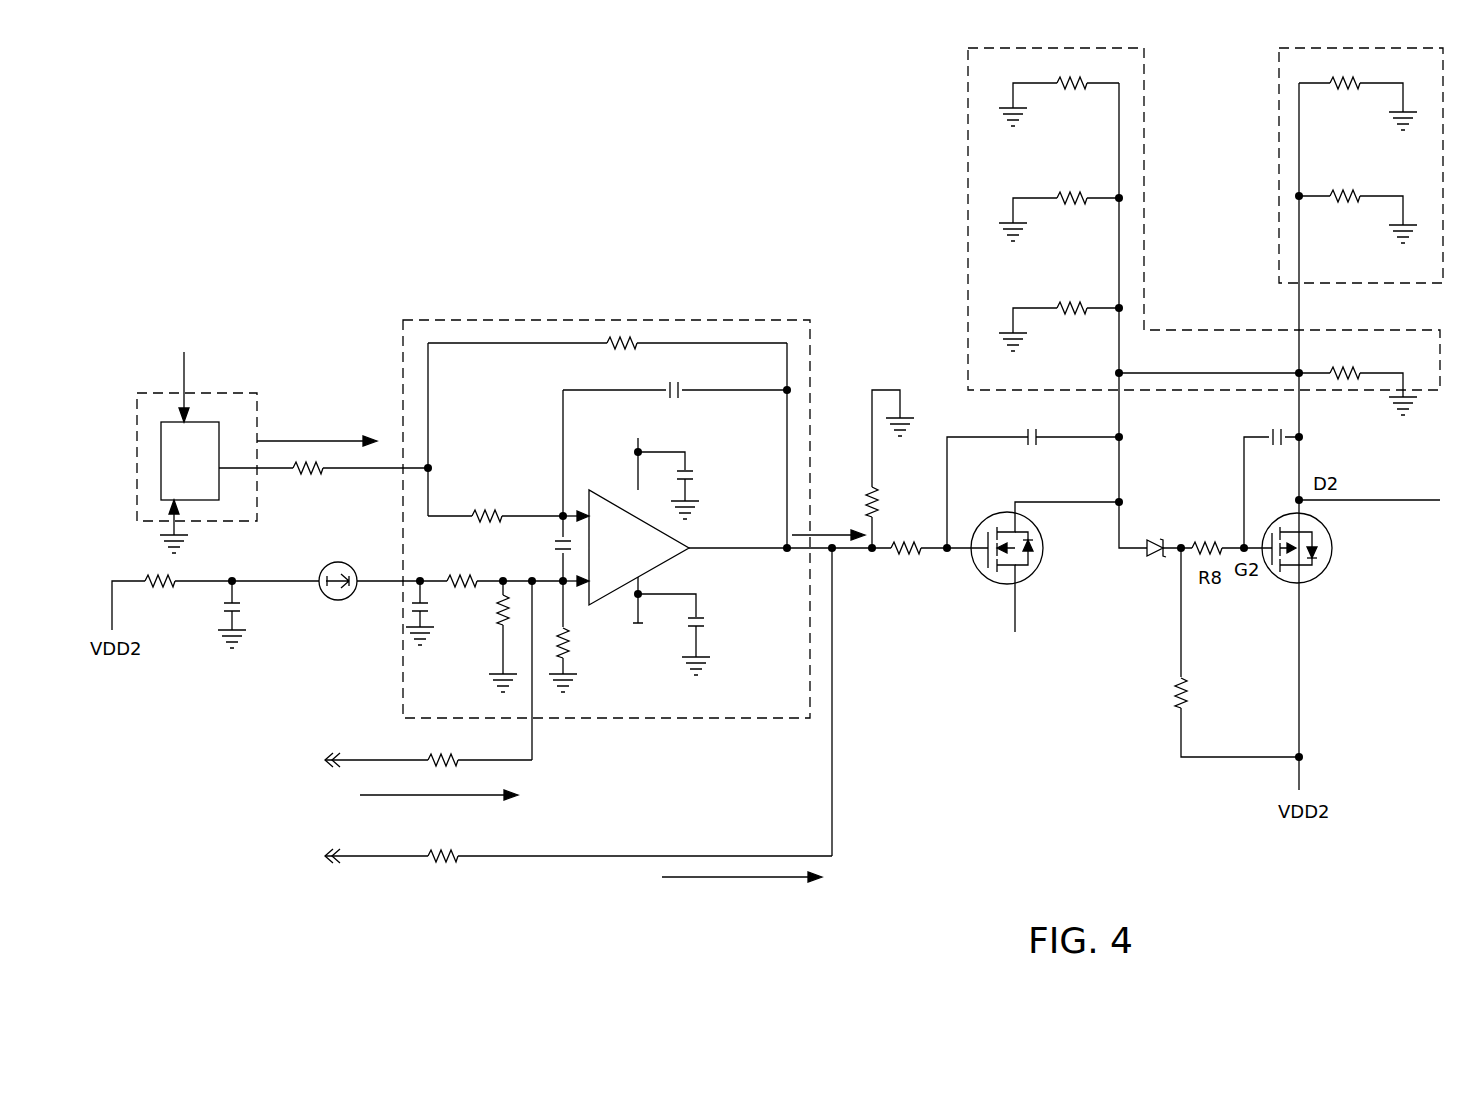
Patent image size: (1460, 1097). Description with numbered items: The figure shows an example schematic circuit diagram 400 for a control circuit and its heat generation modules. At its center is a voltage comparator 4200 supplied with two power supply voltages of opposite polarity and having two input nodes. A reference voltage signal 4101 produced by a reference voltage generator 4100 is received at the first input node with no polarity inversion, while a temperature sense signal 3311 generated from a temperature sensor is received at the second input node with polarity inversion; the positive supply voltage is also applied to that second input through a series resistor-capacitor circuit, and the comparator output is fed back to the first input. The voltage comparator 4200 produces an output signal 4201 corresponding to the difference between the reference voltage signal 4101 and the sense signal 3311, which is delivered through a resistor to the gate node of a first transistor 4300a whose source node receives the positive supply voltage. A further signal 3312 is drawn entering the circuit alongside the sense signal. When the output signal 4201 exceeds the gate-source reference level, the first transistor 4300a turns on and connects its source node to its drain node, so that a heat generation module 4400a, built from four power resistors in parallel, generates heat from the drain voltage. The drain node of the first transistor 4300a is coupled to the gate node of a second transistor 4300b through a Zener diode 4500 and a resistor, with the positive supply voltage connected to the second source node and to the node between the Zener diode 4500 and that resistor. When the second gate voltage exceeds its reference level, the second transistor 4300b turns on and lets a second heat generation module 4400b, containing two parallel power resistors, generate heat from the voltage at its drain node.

The schematic circuit diagram 400 is at (200, 88).
The reference voltage generator 4100 is at (250, 393).
The reference voltage signal 4101 is at (309, 438).
The voltage comparator 4200 is at (455, 320).
The output signal 4201 is at (830, 533).
The first transistor 4300a is at (1043, 550).
The second transistor 4300b is at (1332, 548).
The heat generation module 4400a is at (968, 77).
The heat generation module 4400b is at (1279, 80).
The Zener diode 4500 is at (1153, 541).
The temperature sense signal 3311 is at (483, 797).
The second feedback signal 3312 is at (785, 879).